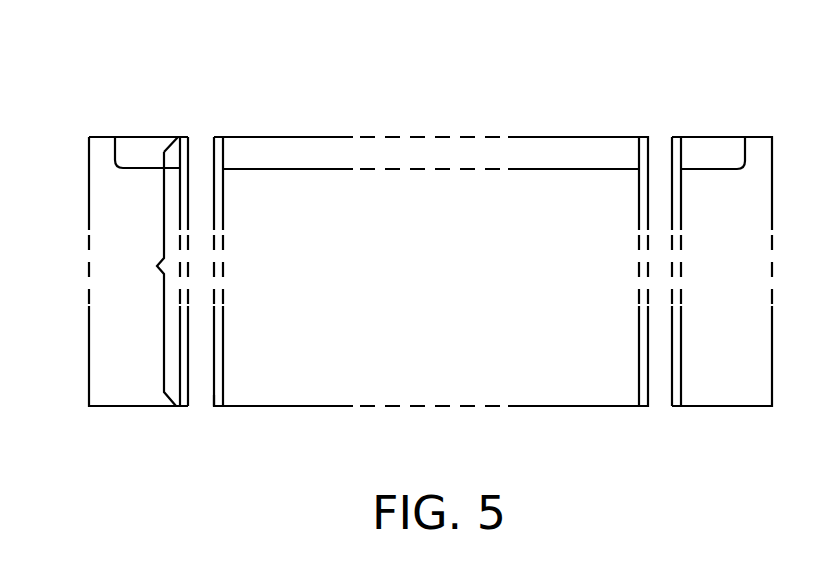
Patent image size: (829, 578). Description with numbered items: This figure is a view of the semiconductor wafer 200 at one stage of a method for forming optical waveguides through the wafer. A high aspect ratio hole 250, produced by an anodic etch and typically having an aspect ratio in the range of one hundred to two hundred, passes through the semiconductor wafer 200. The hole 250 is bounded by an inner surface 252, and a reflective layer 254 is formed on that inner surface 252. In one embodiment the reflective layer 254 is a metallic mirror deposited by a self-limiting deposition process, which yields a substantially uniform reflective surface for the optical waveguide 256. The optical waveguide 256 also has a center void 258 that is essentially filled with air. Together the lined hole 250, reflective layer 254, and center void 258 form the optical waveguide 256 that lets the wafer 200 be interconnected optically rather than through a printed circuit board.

The semiconductor wafer 200 is at (622, 374).
The high aspect ratio hole 250 is at (205, 131).
The inner surface 252 is at (224, 364).
The reflective layer 254 is at (198, 391).
The optical waveguide 256 is at (202, 203).
The center void 258 is at (142, 271).